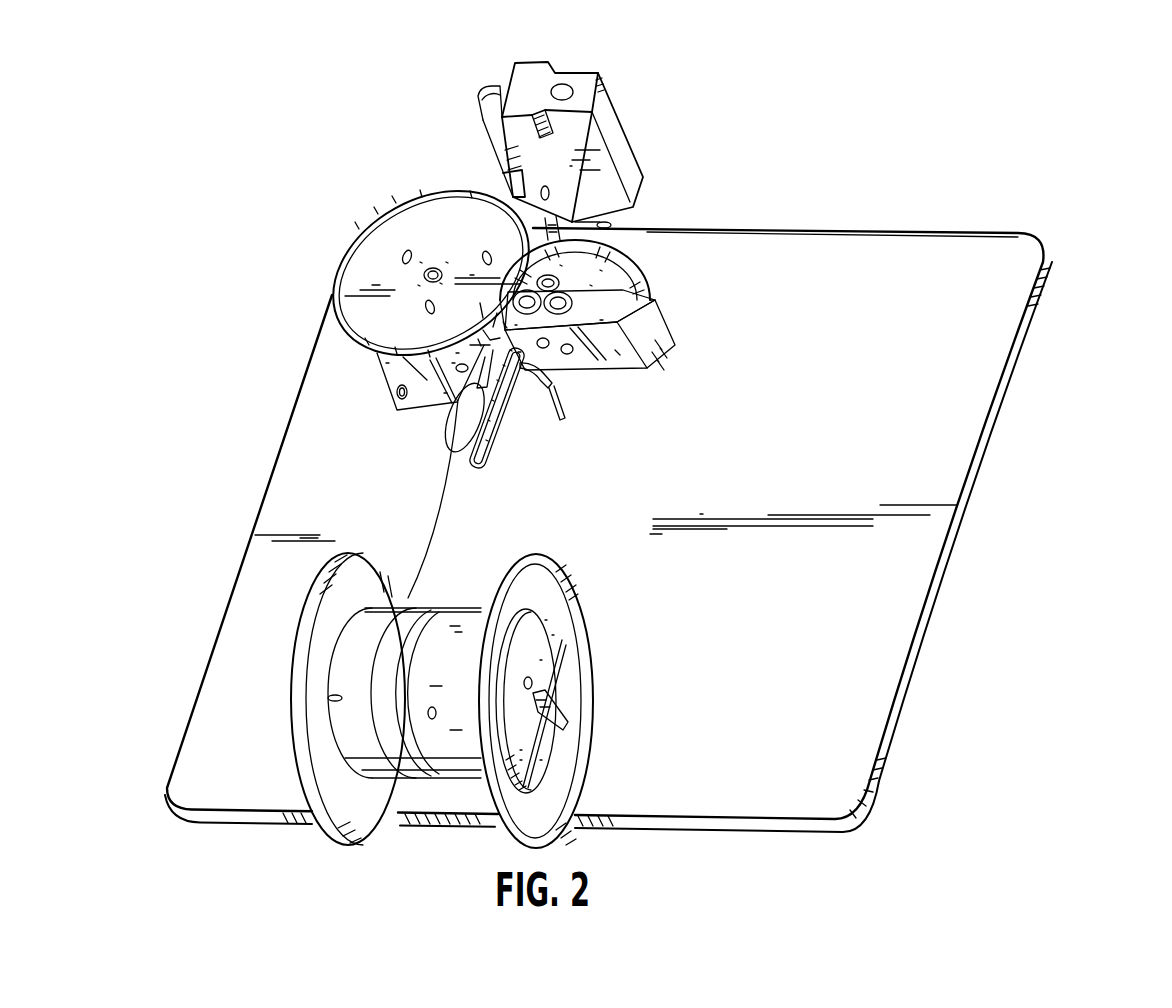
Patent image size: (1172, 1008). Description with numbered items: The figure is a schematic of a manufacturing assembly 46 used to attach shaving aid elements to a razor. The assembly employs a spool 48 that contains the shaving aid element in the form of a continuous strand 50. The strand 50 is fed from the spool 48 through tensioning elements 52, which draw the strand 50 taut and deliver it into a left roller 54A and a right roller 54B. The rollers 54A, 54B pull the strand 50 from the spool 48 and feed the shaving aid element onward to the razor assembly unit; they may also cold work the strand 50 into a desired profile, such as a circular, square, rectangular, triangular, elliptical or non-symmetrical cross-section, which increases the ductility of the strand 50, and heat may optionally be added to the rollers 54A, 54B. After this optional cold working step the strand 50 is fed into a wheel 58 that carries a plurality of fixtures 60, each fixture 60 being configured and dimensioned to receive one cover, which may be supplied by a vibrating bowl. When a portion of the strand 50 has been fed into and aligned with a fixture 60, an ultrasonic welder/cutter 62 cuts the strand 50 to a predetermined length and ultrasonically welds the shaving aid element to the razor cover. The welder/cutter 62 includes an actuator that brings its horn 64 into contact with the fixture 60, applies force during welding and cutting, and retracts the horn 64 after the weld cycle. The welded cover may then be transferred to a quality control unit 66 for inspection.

The manufacturing assembly 46 is at (948, 320).
The spool 48 is at (307, 635).
The continuous strand 50 is at (427, 498).
The tensioning elements 52 is at (497, 425).
The left roller 54A is at (500, 305).
The right roller 54B is at (640, 330).
The wheel 58 is at (623, 277).
The fixture 60 is at (640, 229).
The ultrasonic welder/cutter 62 is at (548, 62).
The horn 64 is at (610, 223).
The quality control unit 66 is at (422, 220).